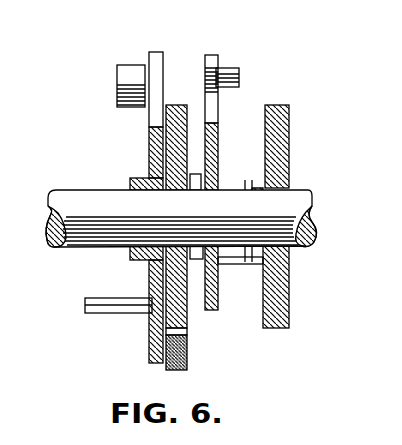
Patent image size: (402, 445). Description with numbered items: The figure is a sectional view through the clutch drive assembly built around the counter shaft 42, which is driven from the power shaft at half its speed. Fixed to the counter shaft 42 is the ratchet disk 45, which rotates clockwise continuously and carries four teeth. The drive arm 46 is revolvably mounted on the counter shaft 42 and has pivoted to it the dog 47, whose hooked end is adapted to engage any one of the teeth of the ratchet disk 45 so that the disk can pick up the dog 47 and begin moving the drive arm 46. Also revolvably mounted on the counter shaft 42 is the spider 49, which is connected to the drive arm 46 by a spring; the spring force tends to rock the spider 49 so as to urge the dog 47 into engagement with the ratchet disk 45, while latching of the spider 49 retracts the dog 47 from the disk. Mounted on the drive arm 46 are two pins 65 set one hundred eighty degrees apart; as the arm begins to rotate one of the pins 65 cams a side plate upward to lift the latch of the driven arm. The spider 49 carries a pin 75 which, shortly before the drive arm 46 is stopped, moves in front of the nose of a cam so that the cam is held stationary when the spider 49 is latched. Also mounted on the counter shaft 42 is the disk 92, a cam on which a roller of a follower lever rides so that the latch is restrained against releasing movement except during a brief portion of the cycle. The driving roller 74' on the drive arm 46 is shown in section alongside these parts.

The counter shaft 42 is at (317, 238).
The ratchet disk 45 is at (168, 104).
The drive arm 46 is at (148, 148).
The dog 47 is at (190, 350).
The spider 49 is at (217, 143).
The pin 65 is at (123, 315).
The sensor 74' is at (126, 66).
The pin 75 is at (231, 68).
The disk 92 is at (288, 147).